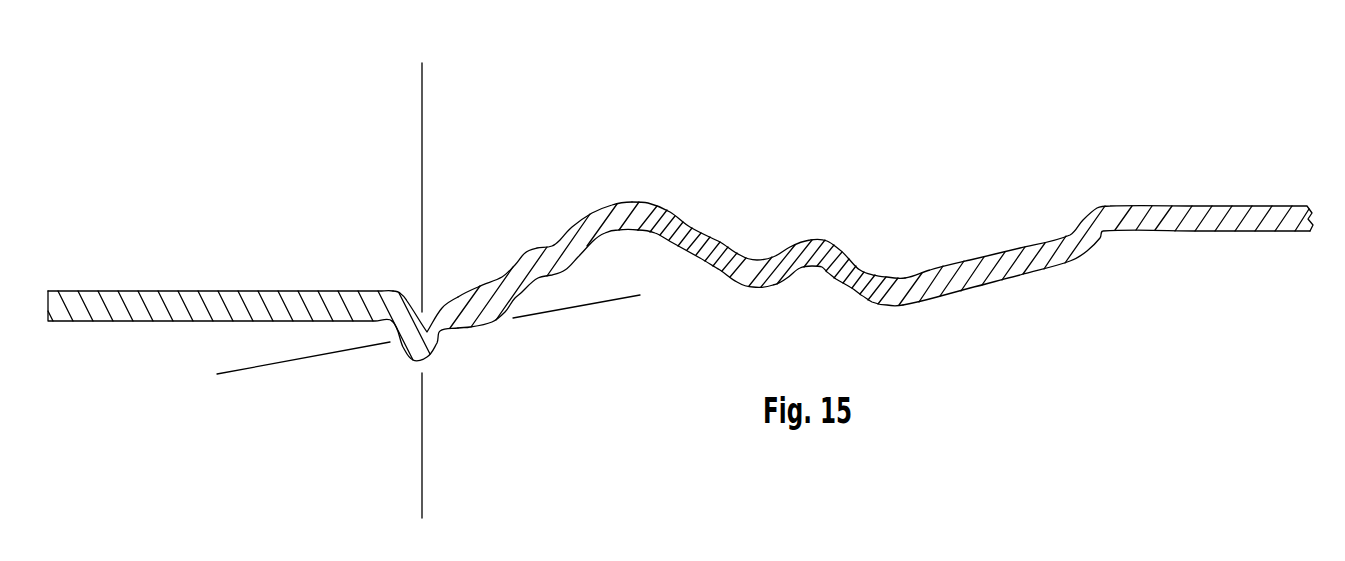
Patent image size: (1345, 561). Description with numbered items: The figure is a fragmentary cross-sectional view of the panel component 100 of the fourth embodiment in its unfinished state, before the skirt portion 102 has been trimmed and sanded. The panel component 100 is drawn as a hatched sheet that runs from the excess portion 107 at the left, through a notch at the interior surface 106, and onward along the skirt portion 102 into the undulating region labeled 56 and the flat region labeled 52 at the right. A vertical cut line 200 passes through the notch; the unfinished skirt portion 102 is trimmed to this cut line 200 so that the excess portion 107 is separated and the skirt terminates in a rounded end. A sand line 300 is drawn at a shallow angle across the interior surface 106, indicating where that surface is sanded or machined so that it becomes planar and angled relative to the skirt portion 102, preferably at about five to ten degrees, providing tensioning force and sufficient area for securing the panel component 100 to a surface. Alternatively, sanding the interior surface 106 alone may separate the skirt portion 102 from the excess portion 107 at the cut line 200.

The panel component 100 is at (1030, 100).
The excess portion 107 is at (215, 268).
The interior surface 106 is at (458, 332).
The skirt portion 102 is at (492, 245).
The raised rib 56 is at (695, 167).
The flange 52 is at (1217, 183).
The cut line 200 is at (422, 123).
The sand line 300 is at (572, 310).